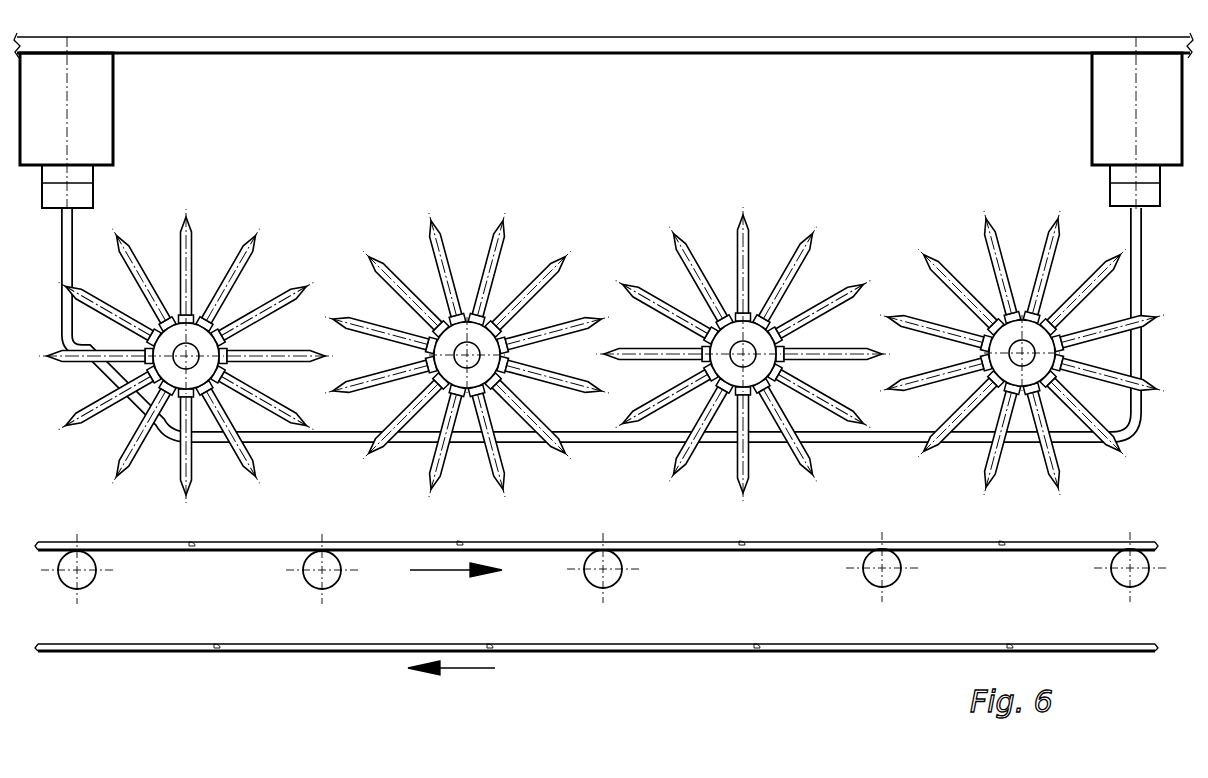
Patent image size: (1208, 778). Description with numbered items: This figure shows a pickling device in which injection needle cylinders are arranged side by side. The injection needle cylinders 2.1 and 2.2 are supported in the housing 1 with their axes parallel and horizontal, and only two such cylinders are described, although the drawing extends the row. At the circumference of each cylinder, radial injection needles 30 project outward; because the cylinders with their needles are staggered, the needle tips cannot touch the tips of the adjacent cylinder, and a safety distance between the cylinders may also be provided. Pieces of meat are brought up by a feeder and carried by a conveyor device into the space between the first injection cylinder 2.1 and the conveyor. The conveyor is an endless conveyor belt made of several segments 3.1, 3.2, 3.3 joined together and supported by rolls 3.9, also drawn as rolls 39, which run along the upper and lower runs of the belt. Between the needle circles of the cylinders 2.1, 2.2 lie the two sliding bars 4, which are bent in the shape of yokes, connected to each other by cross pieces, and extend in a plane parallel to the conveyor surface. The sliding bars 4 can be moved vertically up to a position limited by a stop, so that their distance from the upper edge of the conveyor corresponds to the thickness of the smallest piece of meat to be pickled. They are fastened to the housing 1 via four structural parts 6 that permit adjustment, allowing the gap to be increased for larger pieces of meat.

The housing 1 is at (676, 45).
The sliding bars 4 is at (1133, 290).
The structural parts 6 is at (98, 137).
The injection needles 30 is at (235, 237).
The first injection needle cylinder 2.1 is at (212, 327).
The second injection needle cylinder 2.2 is at (498, 302).
The conveyor belt segment 3.1 is at (183, 548).
The conveyor belt segment 3.2 is at (247, 547).
The conveyor belt segment 3.3 is at (537, 547).
The rolls 3.9 is at (92, 580).
The rolls 39 is at (340, 577).